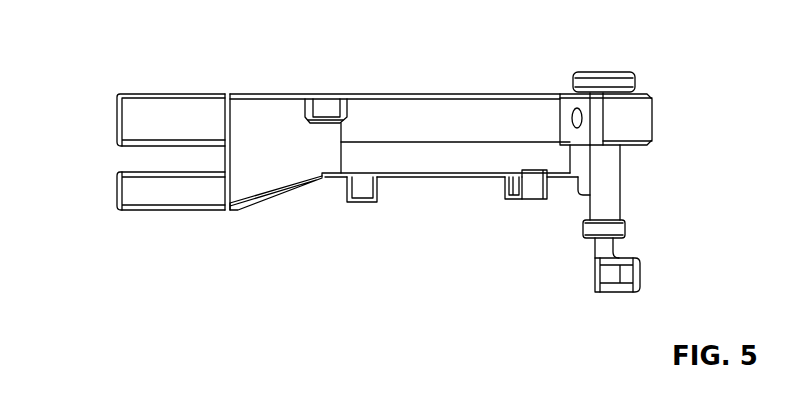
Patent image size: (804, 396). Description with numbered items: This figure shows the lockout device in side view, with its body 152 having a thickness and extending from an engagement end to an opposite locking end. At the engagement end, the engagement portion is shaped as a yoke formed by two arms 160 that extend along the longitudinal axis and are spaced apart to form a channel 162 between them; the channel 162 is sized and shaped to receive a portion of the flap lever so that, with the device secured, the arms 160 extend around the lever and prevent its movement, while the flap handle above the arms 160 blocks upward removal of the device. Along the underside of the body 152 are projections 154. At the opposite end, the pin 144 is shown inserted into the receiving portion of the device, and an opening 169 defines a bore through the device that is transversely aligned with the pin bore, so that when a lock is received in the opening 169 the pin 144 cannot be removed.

The pin 144 is at (628, 162).
The body 152 is at (452, 107).
The mounting feet 154 is at (360, 190).
The arms 160 is at (197, 103).
The channel 162 is at (139, 150).
The opening 169 is at (578, 112).